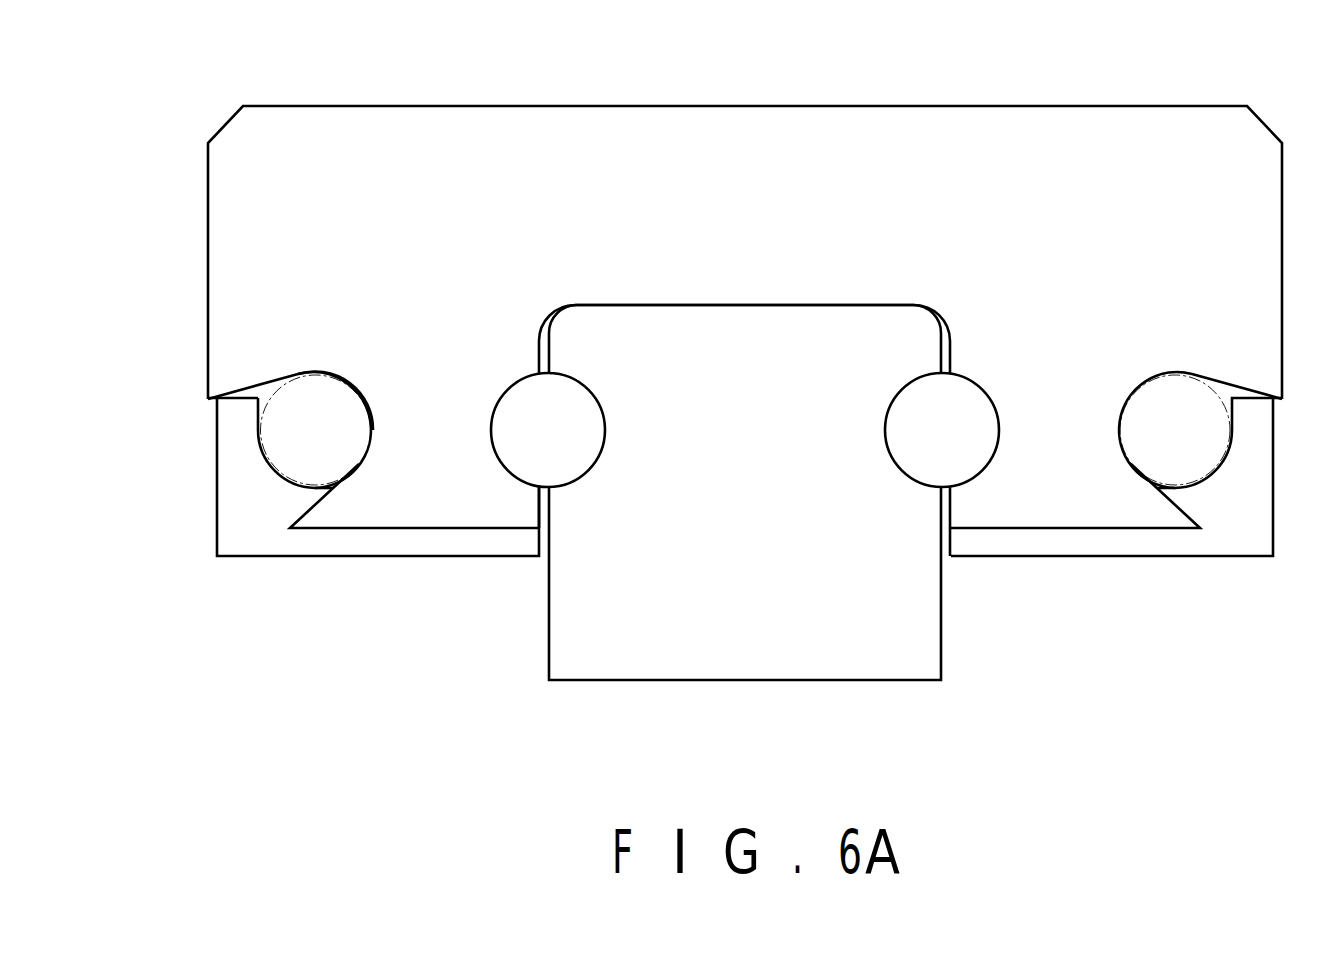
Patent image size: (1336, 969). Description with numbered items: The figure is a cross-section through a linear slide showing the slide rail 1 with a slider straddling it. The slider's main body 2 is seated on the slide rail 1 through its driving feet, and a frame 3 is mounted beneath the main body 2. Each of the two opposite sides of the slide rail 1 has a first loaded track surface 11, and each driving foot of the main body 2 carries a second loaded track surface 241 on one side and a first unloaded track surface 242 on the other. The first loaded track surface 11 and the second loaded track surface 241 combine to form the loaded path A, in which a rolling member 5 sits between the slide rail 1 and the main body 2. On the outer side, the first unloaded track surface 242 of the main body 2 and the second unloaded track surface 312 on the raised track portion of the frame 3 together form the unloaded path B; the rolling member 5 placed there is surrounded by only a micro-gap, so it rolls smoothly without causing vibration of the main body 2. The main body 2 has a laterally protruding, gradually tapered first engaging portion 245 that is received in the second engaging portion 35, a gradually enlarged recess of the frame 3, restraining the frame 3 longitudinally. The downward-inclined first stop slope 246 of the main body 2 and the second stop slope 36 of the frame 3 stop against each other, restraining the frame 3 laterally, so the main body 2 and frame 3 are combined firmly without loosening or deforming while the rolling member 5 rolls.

The slide rail 1 is at (698, 647).
The first loaded track surface 11 is at (600, 455).
The main body 2 is at (737, 122).
The second loaded track surface 241 is at (503, 466).
The first unloaded track surface 242 is at (351, 375).
The first engaging portion 245 is at (333, 510).
The first stop slope 246 is at (238, 392).
The frame 3 is at (392, 541).
The second unloaded track surface 312 is at (272, 471).
The second engaging portion 35 is at (300, 502).
The second stop slope 36 is at (233, 406).
The rolling member 5 is at (322, 415).
The loaded path A is at (536, 400).
The unloaded path B is at (265, 375).